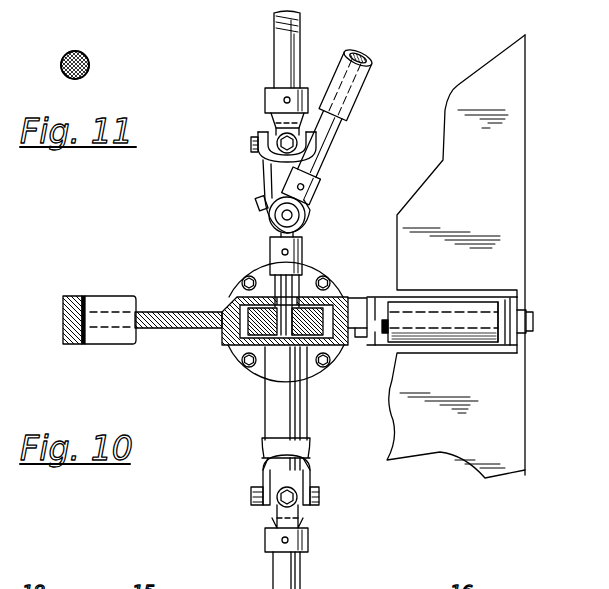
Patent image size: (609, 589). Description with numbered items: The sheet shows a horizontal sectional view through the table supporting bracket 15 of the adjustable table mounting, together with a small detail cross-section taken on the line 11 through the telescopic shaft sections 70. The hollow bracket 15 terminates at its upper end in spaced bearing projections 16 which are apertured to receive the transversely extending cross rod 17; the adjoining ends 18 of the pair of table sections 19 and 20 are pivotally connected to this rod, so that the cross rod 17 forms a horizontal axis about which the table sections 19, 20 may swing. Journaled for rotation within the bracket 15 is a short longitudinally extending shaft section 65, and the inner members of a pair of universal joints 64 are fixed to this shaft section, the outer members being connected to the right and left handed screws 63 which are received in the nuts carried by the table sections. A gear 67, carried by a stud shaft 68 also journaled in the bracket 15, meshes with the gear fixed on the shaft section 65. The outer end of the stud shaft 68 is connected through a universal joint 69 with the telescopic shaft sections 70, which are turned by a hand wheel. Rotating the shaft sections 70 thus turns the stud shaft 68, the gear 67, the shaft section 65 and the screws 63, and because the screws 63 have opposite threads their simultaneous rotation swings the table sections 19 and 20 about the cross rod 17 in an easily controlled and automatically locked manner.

In FIG. 10, the section line 11- 11 is at (382, 100).
In FIG. 10, the table supporting bracket 15 is at (316, 272).
In FIG. 10, the bearing projections 16 is at (80, 295).
In FIG. 10, the cross rod 17 is at (455, 336).
In FIG. 10, the adjoining ends 18 is at (530, 322).
In FIG. 10, the table section 19 is at (510, 190).
In FIG. 10, the table section 20 is at (456, 415).
In FIG. 10, the right and left handed screws 63 is at (272, 29).
In FIG. 10, the universal joints 64 is at (256, 153).
In FIG. 10, the shaft section 65 is at (303, 407).
In FIG. 10, the gear 67 is at (222, 344).
In FIG. 10, the stud shaft 68 is at (297, 284).
In FIG. 10, the universal joint 69 is at (317, 199).
In FIG. 11, the telescopic shaft sections 70 is at (90, 65).
In FIG. 10, the telescopic shaft sections 70 is at (374, 62).